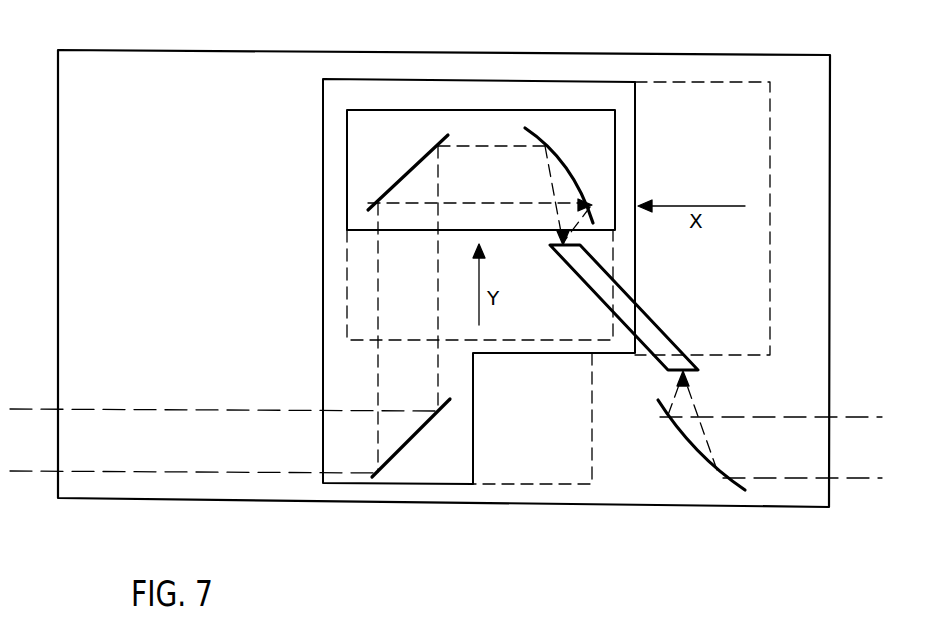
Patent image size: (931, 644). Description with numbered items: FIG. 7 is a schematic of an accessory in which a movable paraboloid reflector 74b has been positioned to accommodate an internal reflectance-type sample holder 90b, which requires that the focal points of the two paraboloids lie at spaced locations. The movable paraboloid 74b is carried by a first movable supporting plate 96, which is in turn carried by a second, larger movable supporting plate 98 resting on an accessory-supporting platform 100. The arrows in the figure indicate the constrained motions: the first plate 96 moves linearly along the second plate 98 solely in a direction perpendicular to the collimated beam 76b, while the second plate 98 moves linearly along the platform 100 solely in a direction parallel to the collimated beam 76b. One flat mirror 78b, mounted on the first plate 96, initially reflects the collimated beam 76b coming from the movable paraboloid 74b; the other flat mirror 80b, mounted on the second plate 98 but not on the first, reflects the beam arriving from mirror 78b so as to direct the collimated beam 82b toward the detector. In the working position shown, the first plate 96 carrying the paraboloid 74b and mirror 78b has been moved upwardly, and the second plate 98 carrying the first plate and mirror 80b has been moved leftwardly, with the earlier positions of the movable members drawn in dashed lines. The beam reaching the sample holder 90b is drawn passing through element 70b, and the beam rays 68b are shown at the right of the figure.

The accessory-supporting platform 100 is at (720, 54).
The second movable supporting member 98 is at (323, 268).
The first movable supporting member 96 is at (615, 182).
The collimated beam 76b is at (520, 202).
The flat mirror 78b is at (420, 160).
The movable paraboloid reflector 74b is at (560, 162).
The internal reflectance-type sample holder 90b is at (643, 312).
The flat mirror 80b is at (430, 417).
The collecting lens 70b is at (675, 427).
The collimated beam 82b is at (200, 470).
The return beam 68b is at (873, 418).